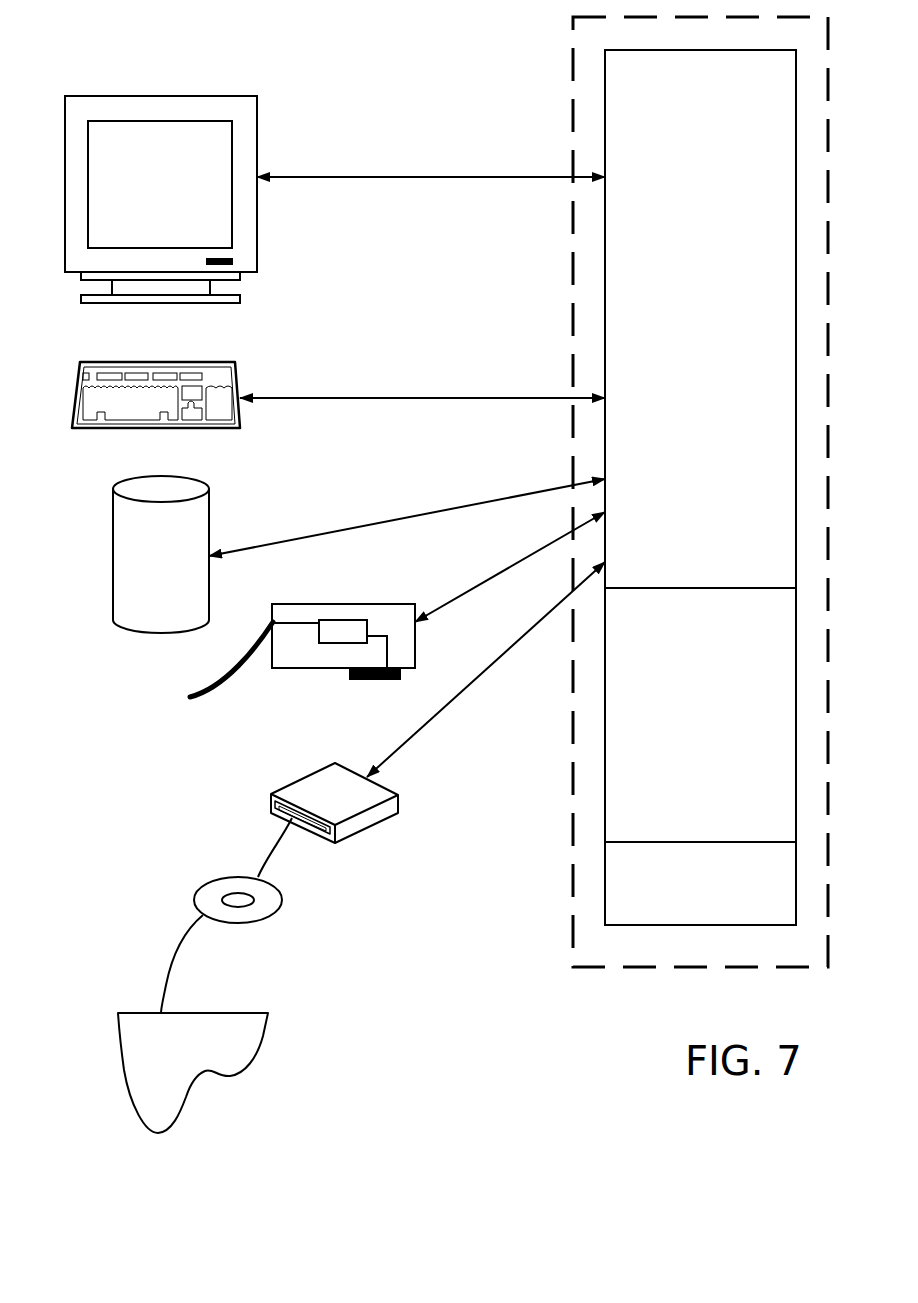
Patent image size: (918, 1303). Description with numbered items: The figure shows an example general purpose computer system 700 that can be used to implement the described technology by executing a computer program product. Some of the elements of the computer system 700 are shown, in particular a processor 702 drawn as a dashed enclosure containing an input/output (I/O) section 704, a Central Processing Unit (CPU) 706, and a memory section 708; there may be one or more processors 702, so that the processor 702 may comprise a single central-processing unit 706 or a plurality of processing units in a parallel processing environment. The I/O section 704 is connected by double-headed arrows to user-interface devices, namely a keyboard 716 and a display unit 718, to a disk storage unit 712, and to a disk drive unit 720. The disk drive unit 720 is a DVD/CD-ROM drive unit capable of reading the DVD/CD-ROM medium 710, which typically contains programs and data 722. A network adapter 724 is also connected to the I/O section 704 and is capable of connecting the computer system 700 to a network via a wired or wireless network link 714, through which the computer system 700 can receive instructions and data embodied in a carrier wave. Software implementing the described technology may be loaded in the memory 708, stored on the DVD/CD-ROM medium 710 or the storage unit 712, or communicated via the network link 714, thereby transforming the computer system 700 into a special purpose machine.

The general purpose computer system 700 is at (533, 1050).
The processor 702 is at (573, 80).
The input/output (I/O) section 704 is at (681, 341).
The central processing unit (CPU) 706 is at (681, 741).
The memory section 708 is at (681, 908).
The DVD/CD-ROM medium 710 is at (210, 882).
The disk storage unit 712 is at (113, 508).
The network link 714 is at (212, 690).
The keyboard 716 is at (117, 363).
The display unit 718 is at (127, 95).
The disk drive unit 720 is at (320, 795).
The programs and data 722 is at (263, 1035).
The network adapter 724 is at (318, 668).